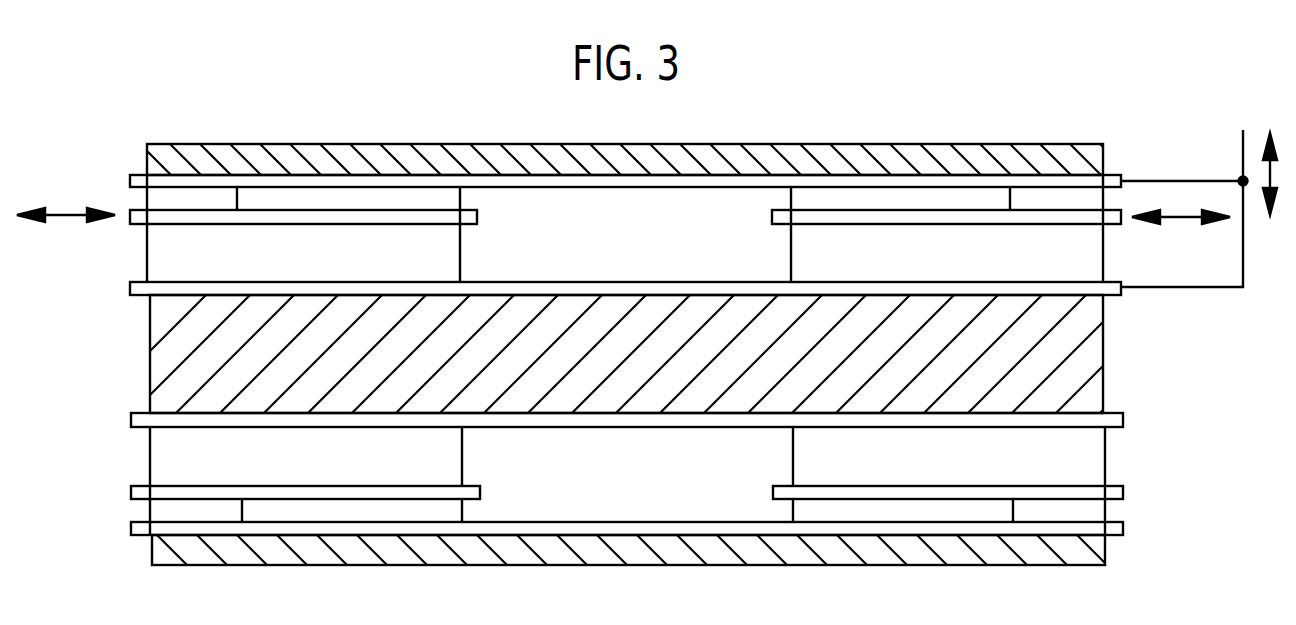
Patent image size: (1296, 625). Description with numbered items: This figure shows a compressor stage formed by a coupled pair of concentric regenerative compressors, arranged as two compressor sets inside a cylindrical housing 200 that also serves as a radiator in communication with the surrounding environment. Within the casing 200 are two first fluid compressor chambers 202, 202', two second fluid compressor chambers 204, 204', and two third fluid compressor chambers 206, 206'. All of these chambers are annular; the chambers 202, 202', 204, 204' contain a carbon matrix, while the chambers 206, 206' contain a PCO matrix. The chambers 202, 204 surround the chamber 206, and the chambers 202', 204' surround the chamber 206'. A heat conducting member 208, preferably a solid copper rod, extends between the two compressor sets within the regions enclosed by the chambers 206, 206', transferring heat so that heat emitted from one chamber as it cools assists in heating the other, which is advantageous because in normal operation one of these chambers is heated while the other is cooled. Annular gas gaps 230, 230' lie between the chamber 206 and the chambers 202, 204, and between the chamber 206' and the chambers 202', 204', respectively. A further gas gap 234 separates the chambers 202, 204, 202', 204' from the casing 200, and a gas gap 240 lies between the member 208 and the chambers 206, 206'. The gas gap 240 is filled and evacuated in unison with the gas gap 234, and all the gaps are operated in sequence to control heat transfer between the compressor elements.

The cylindrical housing 200 is at (993, 143).
The gas gap 234 is at (572, 145).
The second fluid compressor chamber 204 is at (933, 188).
The second fluid compressor chamber 204' is at (303, 180).
The third fluid compressor chamber 206 is at (947, 178).
The third fluid compressor chamber 206' is at (303, 182).
The gas gap 240 is at (130, 290).
The heat conducting member 208 is at (633, 362).
The gas gap 230 is at (996, 474).
The gas gap 230' is at (255, 450).
The first fluid compressor chamber 202 is at (658, 536).
The first fluid compressor chamber 202' is at (576, 515).